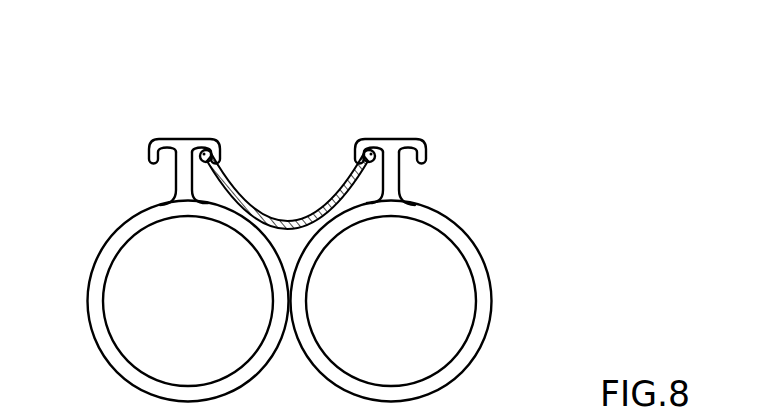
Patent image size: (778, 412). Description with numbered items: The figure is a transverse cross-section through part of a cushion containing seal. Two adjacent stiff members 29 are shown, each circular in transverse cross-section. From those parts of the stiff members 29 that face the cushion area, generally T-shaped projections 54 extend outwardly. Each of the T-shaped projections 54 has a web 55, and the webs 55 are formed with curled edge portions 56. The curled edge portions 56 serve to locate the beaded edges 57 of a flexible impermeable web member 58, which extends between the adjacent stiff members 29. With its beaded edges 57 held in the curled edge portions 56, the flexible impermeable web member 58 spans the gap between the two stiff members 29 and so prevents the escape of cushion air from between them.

The stiff members 29 is at (205, 313).
The T-shaped projections 54 is at (185, 185).
The webs 55 is at (398, 140).
The curled edge portions 56 is at (153, 142).
The beaded edges 57 is at (372, 150).
The flexible impermeable web member 58 is at (293, 223).